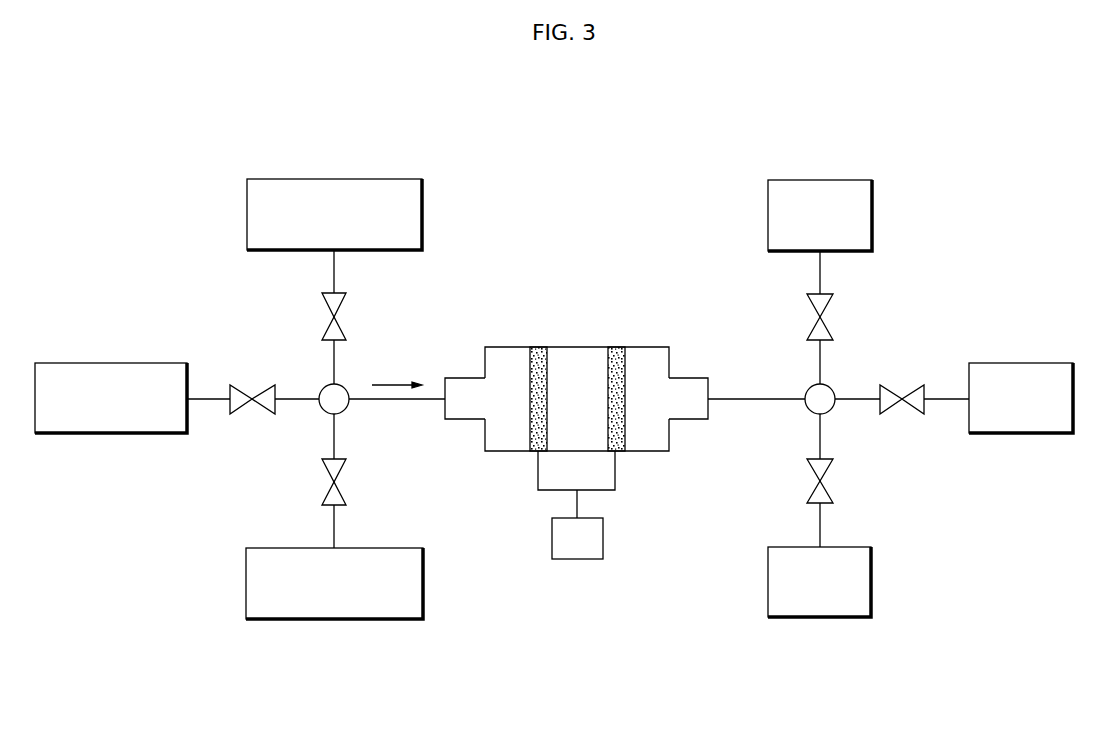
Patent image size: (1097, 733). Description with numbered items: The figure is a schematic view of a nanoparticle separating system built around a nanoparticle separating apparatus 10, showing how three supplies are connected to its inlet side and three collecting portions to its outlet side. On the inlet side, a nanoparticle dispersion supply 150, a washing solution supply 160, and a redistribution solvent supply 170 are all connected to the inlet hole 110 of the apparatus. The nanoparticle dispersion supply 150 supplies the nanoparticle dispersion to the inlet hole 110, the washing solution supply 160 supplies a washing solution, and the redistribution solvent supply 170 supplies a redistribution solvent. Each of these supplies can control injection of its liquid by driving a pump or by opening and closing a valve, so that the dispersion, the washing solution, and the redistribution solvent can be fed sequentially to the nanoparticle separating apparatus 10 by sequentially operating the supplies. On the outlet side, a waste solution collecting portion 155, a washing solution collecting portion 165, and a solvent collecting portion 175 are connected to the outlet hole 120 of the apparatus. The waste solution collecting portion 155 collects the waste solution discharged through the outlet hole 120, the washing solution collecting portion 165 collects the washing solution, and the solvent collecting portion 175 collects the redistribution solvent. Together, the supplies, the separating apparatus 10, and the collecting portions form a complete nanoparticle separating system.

The nanoparticle separating apparatus 10 is at (598, 326).
The inlet hole 110 is at (460, 378).
The outlet hole 120 is at (690, 378).
The nanoparticle dispersion supply 150 is at (133, 363).
The waste solution collecting portion 155 is at (1020, 363).
The washing solution supply 160 is at (247, 215).
The washing solution collecting portion 165 is at (833, 180).
The redistribution solvent supply 170 is at (337, 621).
The solvent collecting portion 175 is at (822, 619).